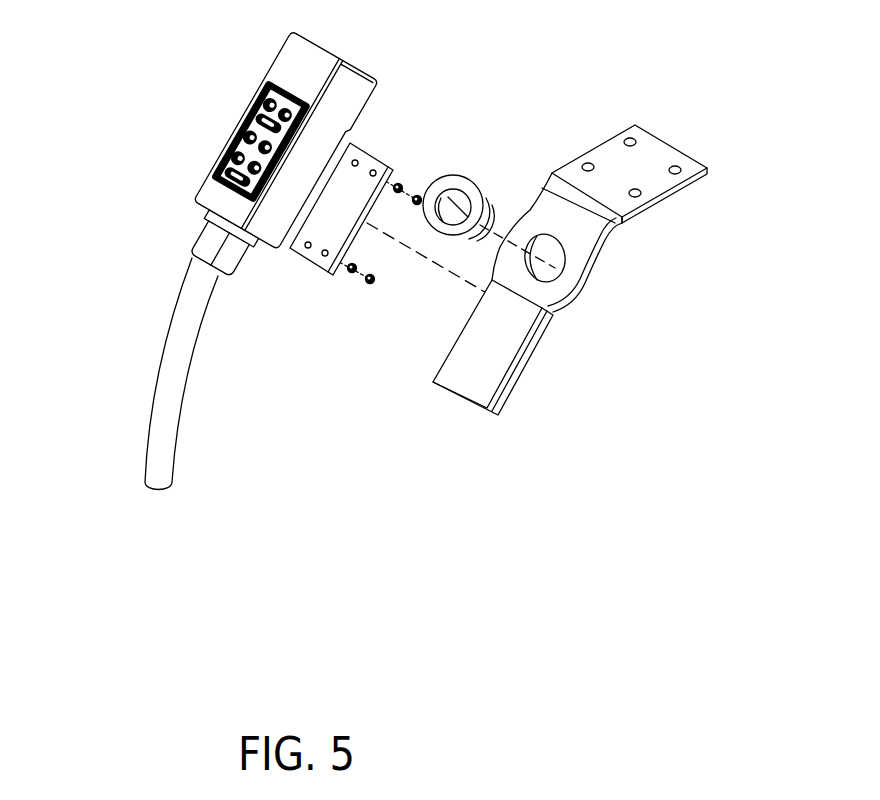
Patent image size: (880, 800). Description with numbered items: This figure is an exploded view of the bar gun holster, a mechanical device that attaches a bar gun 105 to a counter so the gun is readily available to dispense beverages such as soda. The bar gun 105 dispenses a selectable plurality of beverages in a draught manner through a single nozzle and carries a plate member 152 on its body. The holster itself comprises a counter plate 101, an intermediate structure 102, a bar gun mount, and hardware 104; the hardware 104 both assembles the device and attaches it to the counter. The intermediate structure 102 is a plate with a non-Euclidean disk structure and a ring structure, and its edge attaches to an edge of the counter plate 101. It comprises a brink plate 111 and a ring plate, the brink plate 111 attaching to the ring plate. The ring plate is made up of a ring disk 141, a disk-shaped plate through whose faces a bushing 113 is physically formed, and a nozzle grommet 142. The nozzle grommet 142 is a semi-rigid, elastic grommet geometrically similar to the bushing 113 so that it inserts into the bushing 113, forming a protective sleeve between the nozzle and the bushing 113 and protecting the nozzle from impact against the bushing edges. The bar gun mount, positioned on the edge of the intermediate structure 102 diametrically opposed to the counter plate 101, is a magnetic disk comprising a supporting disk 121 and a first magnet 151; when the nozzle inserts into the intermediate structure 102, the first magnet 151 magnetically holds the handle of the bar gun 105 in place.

The counter plate 101 is at (663, 140).
The intermediate structure 102 is at (528, 180).
The hardware 104 is at (413, 182).
The bar gun 105 is at (170, 82).
The brink plate 111 is at (620, 223).
The bushing 113 is at (570, 278).
The supporting disk 121 is at (500, 388).
The ring disk 141 is at (545, 303).
The nozzle grommet 142 is at (470, 178).
The first magnet 151 is at (455, 398).
The plate member 152 is at (393, 170).